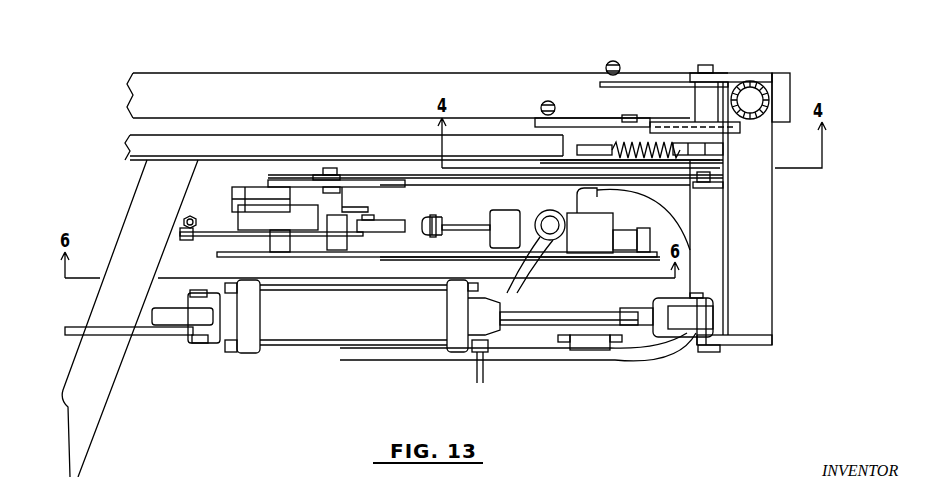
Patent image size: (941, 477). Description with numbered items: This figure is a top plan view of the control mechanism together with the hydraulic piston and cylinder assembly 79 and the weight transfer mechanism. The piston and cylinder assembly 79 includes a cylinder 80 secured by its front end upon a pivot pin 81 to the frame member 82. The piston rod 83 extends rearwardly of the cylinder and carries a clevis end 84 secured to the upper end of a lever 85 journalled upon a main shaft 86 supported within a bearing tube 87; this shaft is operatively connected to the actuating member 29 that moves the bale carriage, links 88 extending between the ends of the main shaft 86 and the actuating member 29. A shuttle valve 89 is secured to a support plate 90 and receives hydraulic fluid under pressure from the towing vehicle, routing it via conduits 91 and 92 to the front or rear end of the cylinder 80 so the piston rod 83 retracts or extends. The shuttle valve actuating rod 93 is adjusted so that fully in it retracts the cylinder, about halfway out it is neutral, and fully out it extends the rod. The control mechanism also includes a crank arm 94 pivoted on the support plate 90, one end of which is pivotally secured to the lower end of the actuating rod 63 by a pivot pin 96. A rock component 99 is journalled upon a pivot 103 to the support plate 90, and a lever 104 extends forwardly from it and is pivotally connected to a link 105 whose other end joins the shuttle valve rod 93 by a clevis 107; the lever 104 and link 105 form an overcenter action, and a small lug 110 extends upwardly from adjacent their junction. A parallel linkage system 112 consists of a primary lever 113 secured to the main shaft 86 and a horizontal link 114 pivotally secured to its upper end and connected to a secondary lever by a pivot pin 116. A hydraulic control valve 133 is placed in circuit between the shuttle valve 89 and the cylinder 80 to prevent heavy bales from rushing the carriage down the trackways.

The actuating member 29 is at (771, 96).
The actuating rod 63 is at (184, 222).
The hydraulic piston and cylinder assembly 79 is at (427, 327).
The cylinder 80 is at (287, 323).
The pivot pin 81 is at (205, 343).
The frame member 82 is at (170, 318).
The piston rod 83 is at (553, 327).
The clevis end 84 is at (687, 340).
The lever 85 is at (720, 320).
The main shaft 86 is at (705, 98).
The bearing tube 87 is at (718, 247).
The links 88 is at (736, 77).
The shuttle valve 89 is at (580, 238).
The support plate 90 is at (390, 257).
The conduit 91 is at (653, 203).
The conduit 92 is at (510, 268).
The shuttle valve actuating rod 93 is at (473, 222).
The crank arm 94 is at (210, 236).
The pivot pin 96 is at (180, 237).
The rock component 99 is at (318, 240).
The pivot 103 is at (347, 243).
The lever 104 is at (353, 228).
The link 105 is at (387, 222).
The clevis 107 is at (435, 213).
The lug 110 is at (442, 225).
The parallel linkage system 112 is at (389, 165).
The primary lever 113 is at (714, 187).
The horizontal link 114 is at (368, 177).
The pivot pin 116 is at (327, 168).
The hydraulic control valve 133 is at (592, 350).